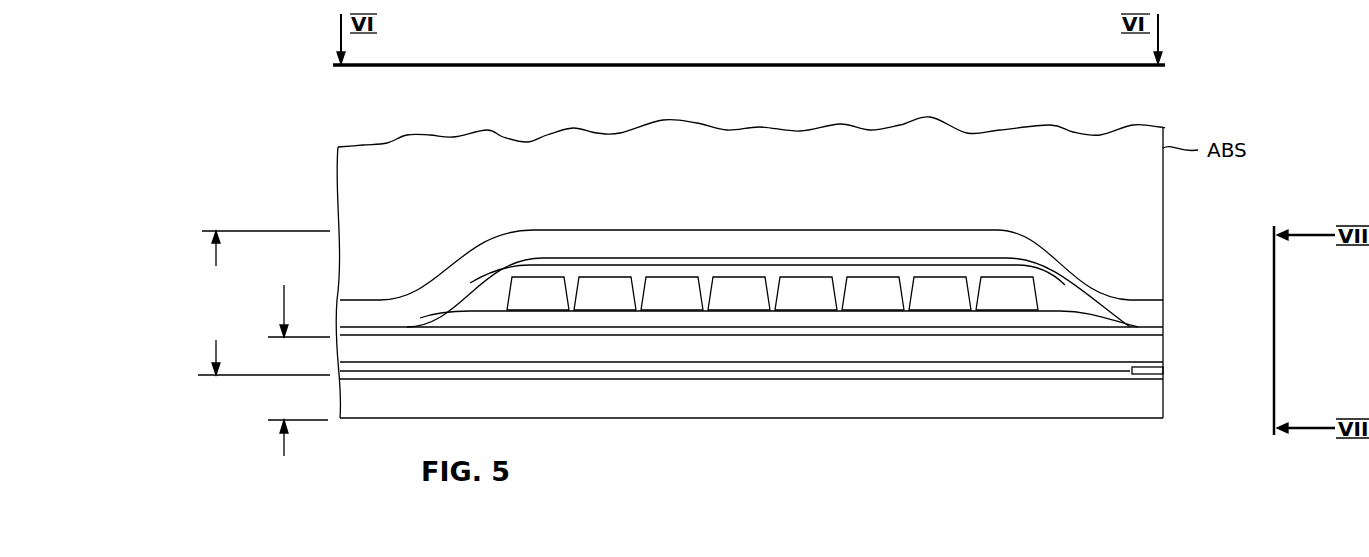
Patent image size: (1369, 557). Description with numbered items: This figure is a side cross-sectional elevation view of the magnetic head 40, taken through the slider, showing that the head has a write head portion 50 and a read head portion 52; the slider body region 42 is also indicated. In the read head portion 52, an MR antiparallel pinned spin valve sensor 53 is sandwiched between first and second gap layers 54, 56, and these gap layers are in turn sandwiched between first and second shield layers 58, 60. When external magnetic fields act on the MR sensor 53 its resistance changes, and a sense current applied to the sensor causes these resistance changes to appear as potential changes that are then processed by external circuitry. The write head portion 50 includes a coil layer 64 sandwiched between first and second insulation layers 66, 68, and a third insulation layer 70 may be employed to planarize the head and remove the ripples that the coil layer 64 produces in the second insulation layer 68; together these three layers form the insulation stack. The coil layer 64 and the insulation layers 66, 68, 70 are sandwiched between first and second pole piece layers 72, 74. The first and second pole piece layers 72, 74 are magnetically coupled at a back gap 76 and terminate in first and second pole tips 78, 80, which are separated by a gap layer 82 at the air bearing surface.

The magnetic head 40 is at (326, 116).
The overcoat layer 42 is at (408, 158).
The write head portion 50 is at (257, 303).
The read head portion 52 is at (292, 488).
The MR antiparallel pinned spin valve sensor 53 is at (1163, 373).
The first gap layer 54 is at (820, 379).
The second gap layer 56 is at (786, 363).
The first shield layer 58 is at (900, 402).
The second shield layer 60 is at (751, 405).
The first pole piece layer 72 is at (1002, 350).
The coil layer 64 is at (803, 283).
The first insulation layer 66 is at (685, 320).
The second insulation layer 68 is at (1054, 292).
The third insulation layer 70 is at (578, 262).
The second pole piece layer 74 is at (901, 242).
The back gap 76 is at (373, 300).
The first pole tip 78 is at (1163, 352).
The second pole tip 80 is at (1158, 309).
The gap layer 82 is at (1163, 329).